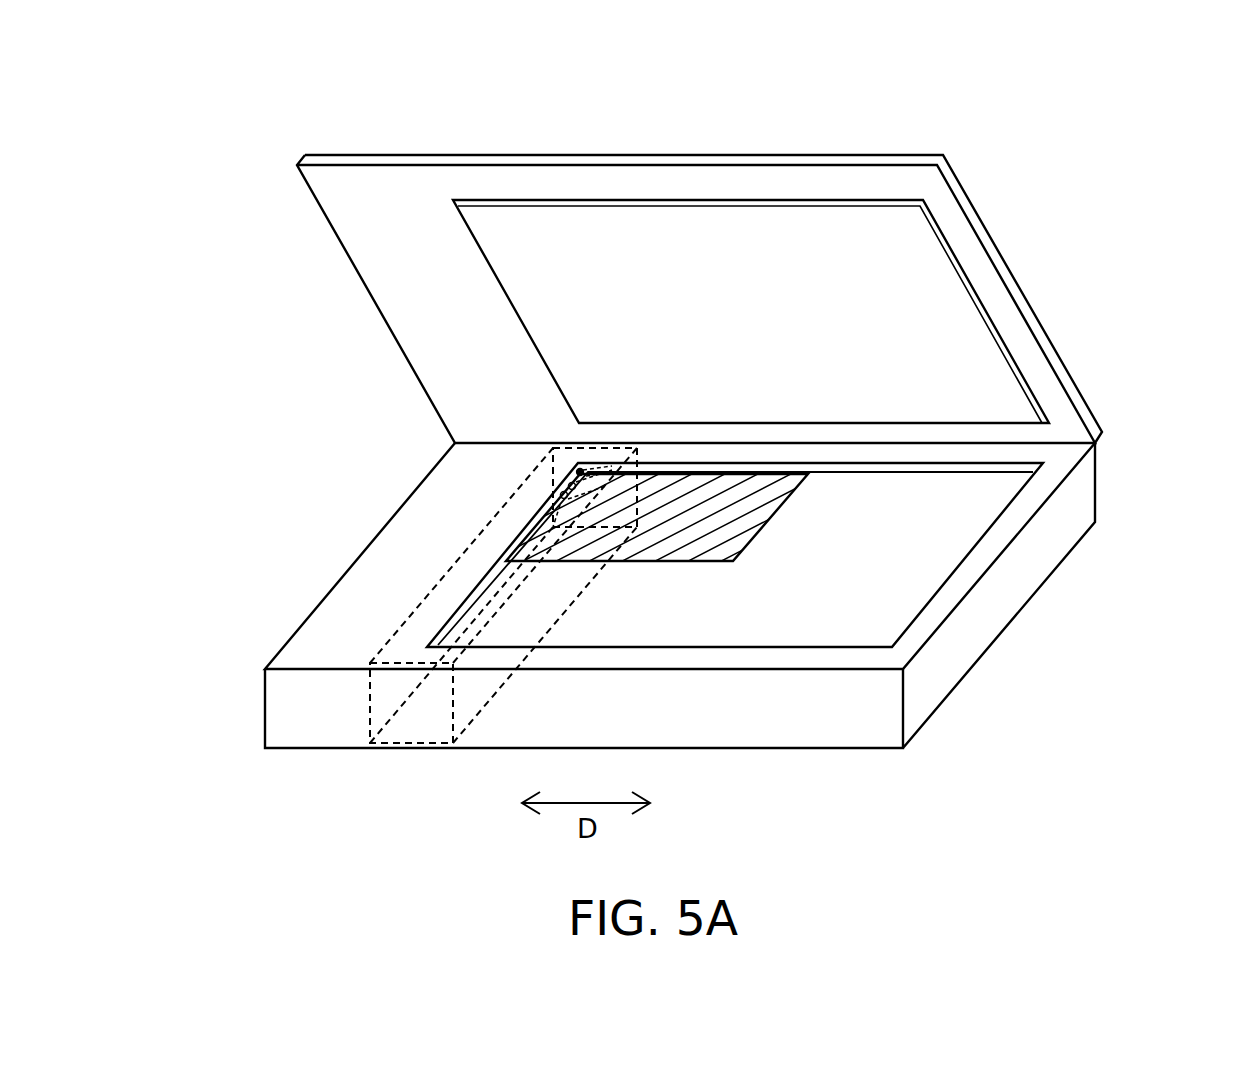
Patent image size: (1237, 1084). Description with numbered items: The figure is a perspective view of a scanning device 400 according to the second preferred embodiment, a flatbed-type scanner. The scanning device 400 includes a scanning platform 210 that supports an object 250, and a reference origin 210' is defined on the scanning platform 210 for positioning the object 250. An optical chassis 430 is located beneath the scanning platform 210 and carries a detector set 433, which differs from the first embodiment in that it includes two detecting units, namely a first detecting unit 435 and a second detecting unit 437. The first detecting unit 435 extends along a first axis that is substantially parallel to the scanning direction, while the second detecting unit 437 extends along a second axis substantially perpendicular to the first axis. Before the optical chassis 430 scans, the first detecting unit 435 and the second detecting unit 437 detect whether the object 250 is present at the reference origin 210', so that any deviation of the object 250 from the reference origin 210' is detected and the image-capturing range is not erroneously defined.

The scanning device 400 is at (1225, 88).
The scanning platform 210 is at (776, 602).
The reference origin 210' is at (667, 322).
The object 250 is at (750, 552).
The optical chassis 430 is at (397, 640).
The detector set 433 is at (438, 473).
The first detecting unit 435 is at (563, 527).
The second detecting unit 437 is at (636, 449).